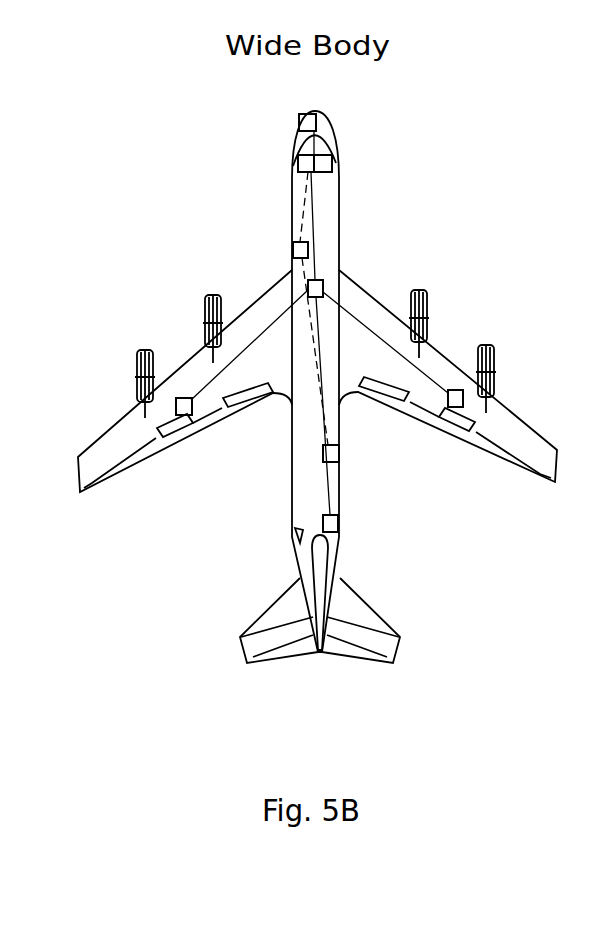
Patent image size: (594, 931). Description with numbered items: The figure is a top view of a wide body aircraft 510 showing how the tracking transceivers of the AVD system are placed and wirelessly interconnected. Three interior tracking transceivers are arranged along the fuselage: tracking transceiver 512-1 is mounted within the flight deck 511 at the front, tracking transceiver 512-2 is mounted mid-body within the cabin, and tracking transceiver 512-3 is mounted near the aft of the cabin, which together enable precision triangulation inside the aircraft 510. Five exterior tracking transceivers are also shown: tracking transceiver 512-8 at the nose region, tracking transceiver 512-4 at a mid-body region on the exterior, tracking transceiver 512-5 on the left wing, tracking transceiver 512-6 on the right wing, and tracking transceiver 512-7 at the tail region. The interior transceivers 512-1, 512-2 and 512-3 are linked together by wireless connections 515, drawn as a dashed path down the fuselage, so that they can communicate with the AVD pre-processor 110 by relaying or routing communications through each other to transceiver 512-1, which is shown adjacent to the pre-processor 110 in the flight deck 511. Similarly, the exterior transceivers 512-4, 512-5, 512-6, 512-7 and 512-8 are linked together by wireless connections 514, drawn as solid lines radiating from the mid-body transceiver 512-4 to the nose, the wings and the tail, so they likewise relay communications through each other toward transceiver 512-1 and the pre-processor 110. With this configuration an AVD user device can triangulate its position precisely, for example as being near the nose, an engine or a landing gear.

The wide body aircraft 510 is at (172, 188).
The flight deck 511 is at (340, 133).
The AVD pre-processor 110 is at (332, 158).
The tracking transceiver 512-1 is at (298, 160).
The tracking transceiver 512-2 is at (292, 247).
The tracking transceiver 512-3 is at (341, 453).
The tracking transceiver 512-4 is at (323, 288).
The tracking transceiver 512-5 is at (177, 397).
The tracking transceiver 512-6 is at (453, 390).
The tracking transceiver 512-7 is at (323, 522).
The tracking transceiver 512-8 is at (299, 122).
The wireless connections 514 is at (318, 218).
The wireless connections 515 is at (303, 210).